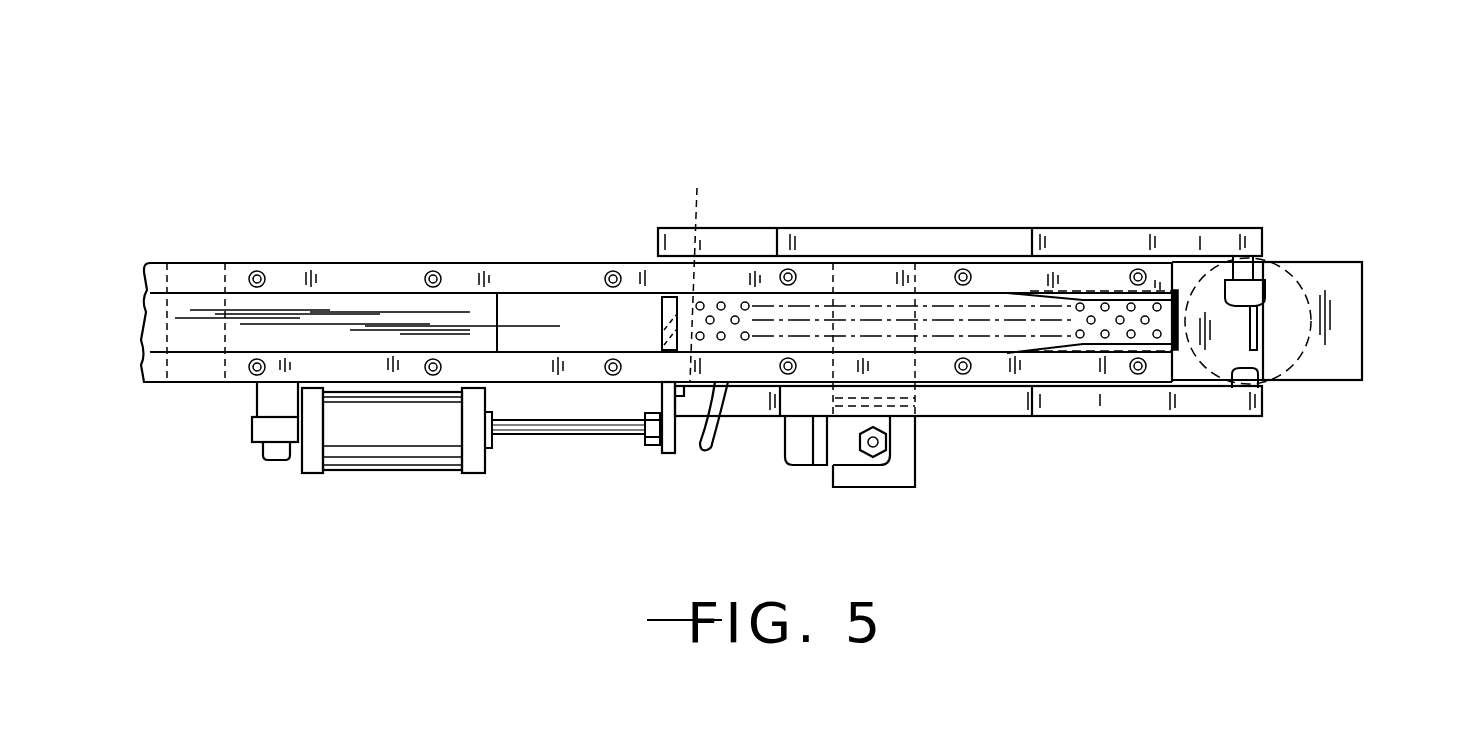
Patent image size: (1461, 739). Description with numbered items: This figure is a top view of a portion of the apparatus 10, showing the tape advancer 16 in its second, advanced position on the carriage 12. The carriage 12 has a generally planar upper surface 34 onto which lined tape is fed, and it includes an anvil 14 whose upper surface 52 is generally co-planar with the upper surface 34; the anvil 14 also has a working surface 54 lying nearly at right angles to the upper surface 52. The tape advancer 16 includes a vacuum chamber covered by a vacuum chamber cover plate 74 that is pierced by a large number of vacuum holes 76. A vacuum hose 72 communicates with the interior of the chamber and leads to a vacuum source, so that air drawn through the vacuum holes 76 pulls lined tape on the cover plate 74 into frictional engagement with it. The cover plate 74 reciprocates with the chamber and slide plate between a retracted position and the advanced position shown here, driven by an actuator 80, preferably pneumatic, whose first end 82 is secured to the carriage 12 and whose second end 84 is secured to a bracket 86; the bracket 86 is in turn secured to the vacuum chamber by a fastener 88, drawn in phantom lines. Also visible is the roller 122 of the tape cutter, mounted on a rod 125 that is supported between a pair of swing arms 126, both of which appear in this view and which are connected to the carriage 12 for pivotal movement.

The apparatus 10 is at (1003, 120).
The carriage 12 is at (145, 320).
The anvil 14 is at (1333, 258).
The tape advancer 16 is at (958, 438).
The upper surface 34 is at (272, 325).
The upper surface 52 is at (1333, 281).
The working surface 54 is at (1362, 336).
The vacuum hose 72 is at (720, 432).
The vacuum chamber cover plate 74 is at (868, 330).
The vacuum holes 76 is at (745, 302).
The actuator 80 is at (375, 472).
The first end 82 is at (250, 432).
The second end 84 is at (622, 440).
The bracket 86 is at (655, 395).
The fastener 88 is at (695, 265).
The roller 122 is at (1248, 300).
The rod 125 is at (1233, 272).
The swing arms 126 is at (1060, 228).